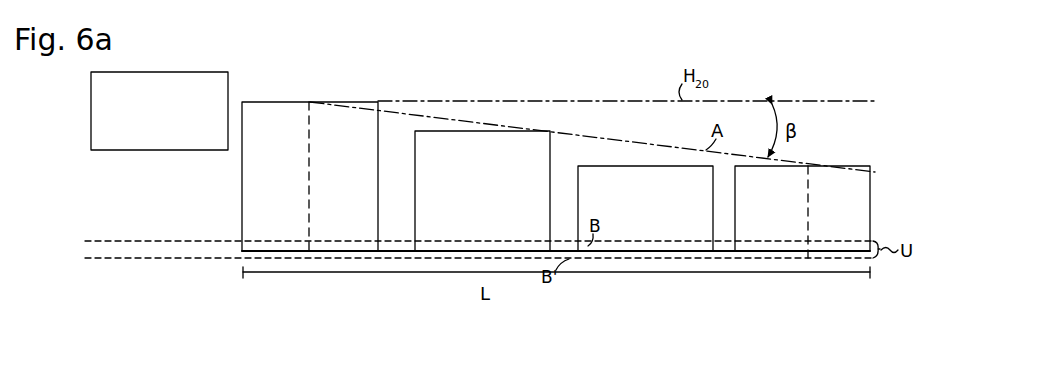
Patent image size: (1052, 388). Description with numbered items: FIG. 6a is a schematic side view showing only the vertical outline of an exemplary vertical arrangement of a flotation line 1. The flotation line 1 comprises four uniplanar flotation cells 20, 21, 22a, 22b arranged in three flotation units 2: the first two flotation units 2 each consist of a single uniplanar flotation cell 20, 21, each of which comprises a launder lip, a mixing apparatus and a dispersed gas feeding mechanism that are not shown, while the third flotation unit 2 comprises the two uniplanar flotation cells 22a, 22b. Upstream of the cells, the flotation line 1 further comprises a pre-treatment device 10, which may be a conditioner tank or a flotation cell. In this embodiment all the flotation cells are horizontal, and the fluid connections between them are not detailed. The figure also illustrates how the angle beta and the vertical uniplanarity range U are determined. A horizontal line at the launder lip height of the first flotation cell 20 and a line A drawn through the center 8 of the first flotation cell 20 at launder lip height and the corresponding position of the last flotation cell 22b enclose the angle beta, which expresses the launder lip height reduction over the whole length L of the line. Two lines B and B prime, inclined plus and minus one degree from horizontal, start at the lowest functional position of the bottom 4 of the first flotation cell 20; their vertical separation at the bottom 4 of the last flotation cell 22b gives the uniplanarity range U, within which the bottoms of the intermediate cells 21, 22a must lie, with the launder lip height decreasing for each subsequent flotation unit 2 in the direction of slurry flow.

The flotation line 1 is at (521, 78).
The flotation unit 2 is at (298, 290).
The bottom 4 is at (772, 252).
The center 8 is at (310, 102).
The pre-treatment device 10 is at (166, 119).
The first uniplanar flotation cell 20 is at (290, 169).
The second uniplanar flotation cell 21 is at (494, 199).
The uniplanar flotation cell 22a is at (660, 215).
The last uniplanar flotation cell 22b is at (797, 211).